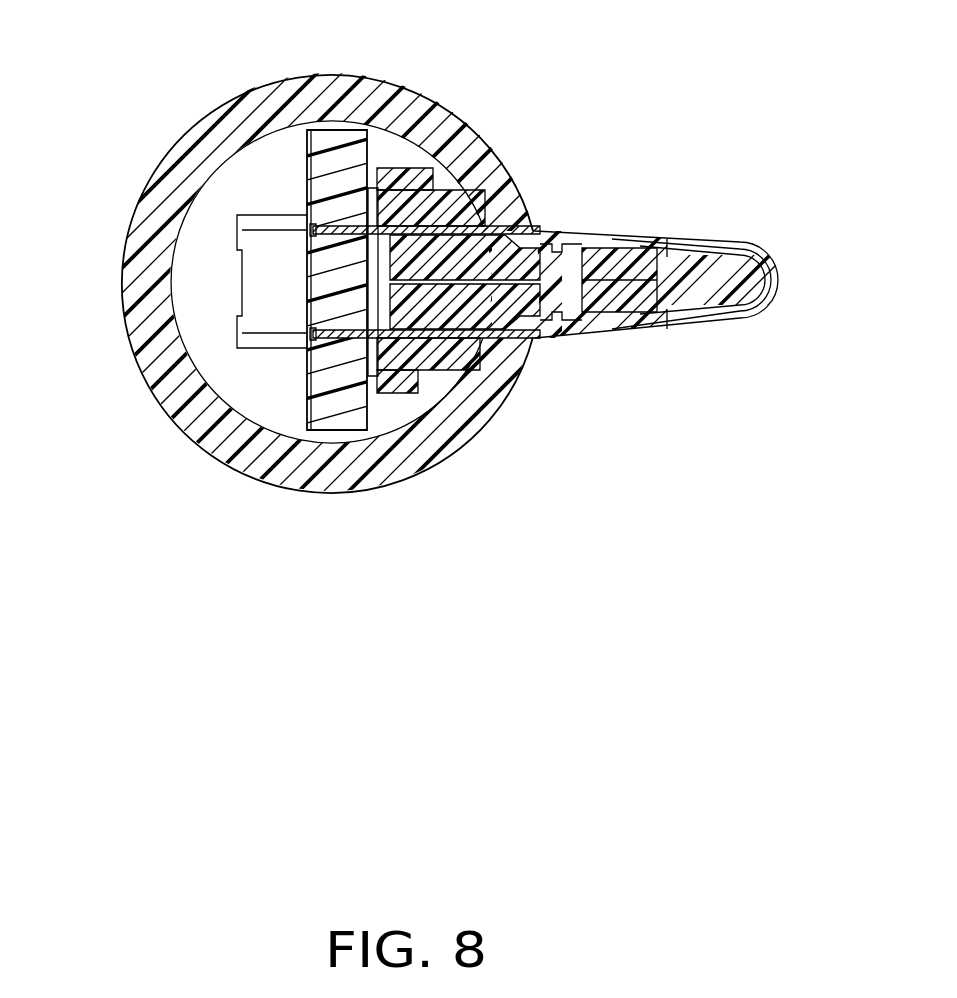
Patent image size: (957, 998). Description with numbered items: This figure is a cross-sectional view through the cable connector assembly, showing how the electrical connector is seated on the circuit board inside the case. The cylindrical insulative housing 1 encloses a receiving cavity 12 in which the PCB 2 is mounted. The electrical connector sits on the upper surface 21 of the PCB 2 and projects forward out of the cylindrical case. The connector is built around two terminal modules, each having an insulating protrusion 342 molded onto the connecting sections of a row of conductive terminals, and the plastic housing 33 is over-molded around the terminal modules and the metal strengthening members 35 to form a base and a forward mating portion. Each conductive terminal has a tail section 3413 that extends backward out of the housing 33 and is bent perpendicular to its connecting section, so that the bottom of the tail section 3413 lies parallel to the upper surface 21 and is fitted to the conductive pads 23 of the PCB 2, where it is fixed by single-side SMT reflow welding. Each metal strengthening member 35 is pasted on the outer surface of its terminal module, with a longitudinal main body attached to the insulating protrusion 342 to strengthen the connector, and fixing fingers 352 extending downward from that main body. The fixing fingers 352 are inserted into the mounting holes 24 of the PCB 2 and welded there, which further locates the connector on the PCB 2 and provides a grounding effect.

The insulative housing 1 is at (152, 233).
The receiving cavity 12 is at (200, 290).
The PCB 2 is at (338, 157).
The upper surface 21 is at (375, 182).
The conductive pads 23 is at (395, 178).
The mounting holes 24 is at (303, 215).
The housing 33 is at (507, 395).
The metal strengthening member 35 is at (538, 229).
The insulating protrusion 342 is at (445, 226).
The tail section 3413 is at (437, 222).
The fixing fingers 352 is at (307, 228).